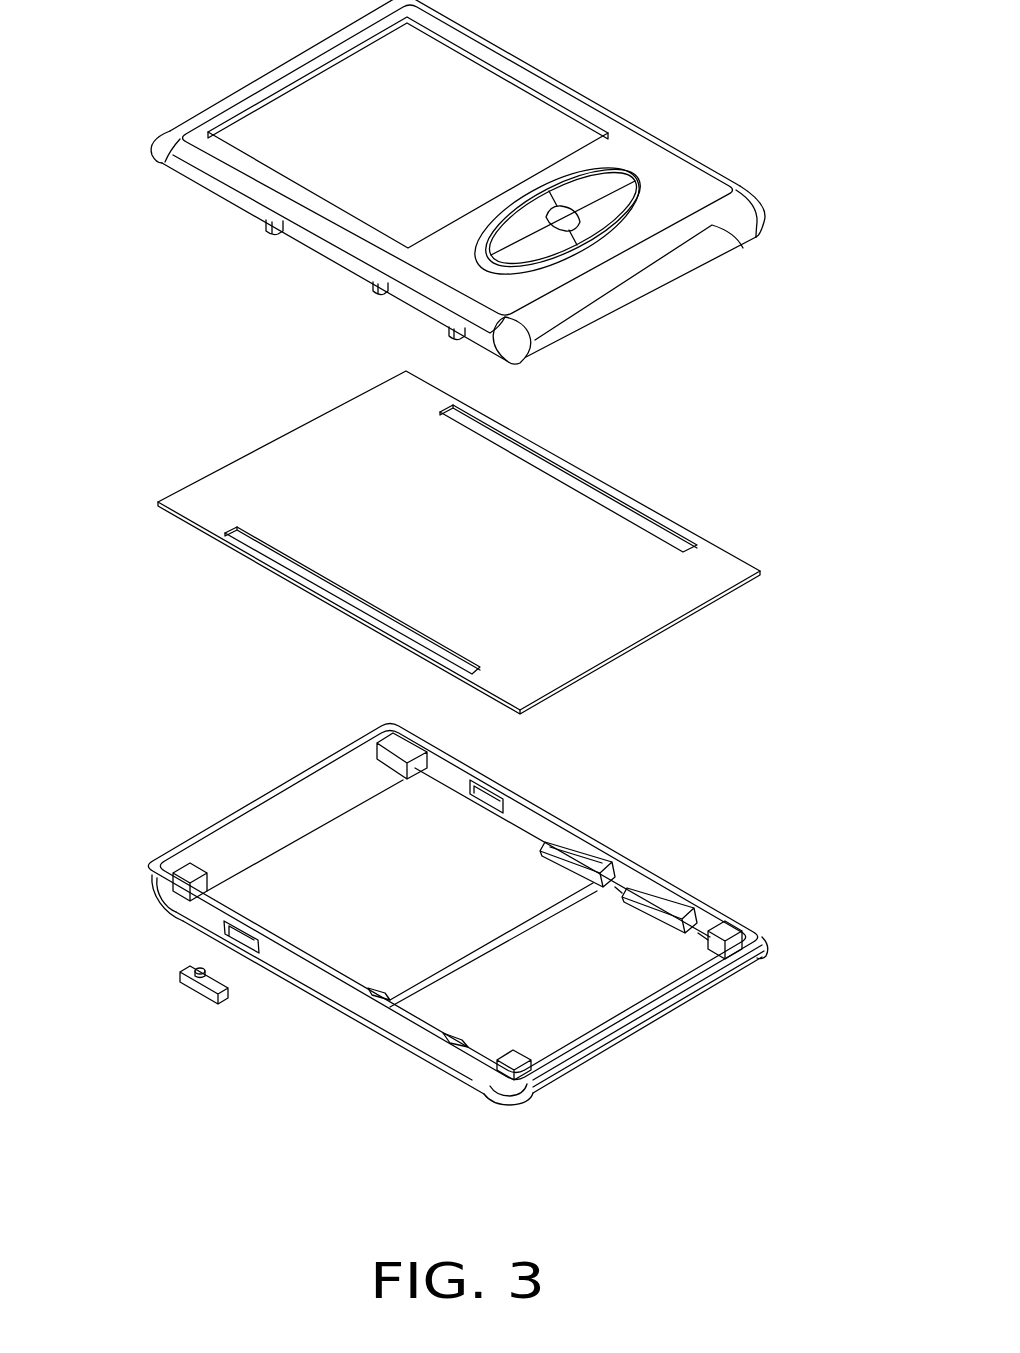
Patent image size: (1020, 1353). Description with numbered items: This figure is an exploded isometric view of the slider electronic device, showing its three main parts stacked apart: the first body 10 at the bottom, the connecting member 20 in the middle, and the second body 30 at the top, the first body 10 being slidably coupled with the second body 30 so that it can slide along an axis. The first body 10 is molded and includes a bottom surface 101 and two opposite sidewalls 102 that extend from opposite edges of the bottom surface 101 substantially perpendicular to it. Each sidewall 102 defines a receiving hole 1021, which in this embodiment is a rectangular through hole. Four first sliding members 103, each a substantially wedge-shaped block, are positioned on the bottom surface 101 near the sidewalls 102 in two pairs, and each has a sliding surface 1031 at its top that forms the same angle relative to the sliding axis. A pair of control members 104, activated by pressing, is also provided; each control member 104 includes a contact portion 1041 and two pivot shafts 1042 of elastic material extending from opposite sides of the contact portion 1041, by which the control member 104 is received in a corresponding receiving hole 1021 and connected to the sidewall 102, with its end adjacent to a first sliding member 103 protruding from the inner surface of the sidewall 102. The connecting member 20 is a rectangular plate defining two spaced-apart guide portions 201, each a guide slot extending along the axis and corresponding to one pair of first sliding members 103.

The first body 10 is at (277, 817).
The bottom surface 101 is at (375, 835).
The sidewall 102 is at (332, 982).
The receiving hole 1021 is at (237, 933).
The first sliding member 103 is at (595, 873).
The sliding surface 1031 is at (565, 848).
The control member 104 is at (144, 1024).
The contact portion 1041 is at (210, 997).
The pivot shaft 1042 is at (187, 985).
The connecting member 20 is at (672, 598).
The guide portion 201 is at (632, 518).
The second body 30 is at (712, 225).